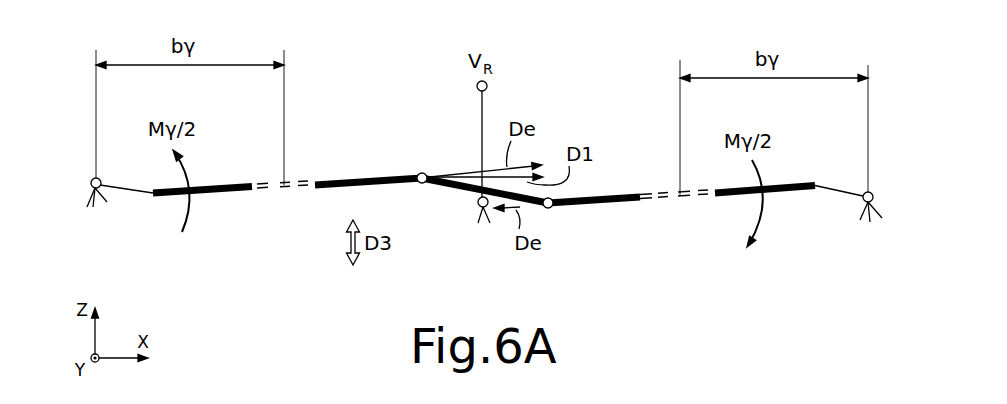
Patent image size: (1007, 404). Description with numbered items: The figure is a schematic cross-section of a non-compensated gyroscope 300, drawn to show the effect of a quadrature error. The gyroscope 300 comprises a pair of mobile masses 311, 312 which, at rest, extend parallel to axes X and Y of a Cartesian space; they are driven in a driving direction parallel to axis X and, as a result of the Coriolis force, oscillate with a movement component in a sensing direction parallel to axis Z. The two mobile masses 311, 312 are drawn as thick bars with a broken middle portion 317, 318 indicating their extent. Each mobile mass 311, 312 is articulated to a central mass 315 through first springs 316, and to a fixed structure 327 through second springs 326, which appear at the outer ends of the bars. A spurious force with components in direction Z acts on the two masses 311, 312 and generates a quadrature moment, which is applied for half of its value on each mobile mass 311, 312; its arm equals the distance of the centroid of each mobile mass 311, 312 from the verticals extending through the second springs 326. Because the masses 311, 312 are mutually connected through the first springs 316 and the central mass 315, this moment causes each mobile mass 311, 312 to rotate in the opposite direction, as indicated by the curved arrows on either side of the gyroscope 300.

The non-compensated gyroscope 300 is at (796, 39).
The mobile mass 311 is at (362, 177).
The mobile mass 312 is at (605, 195).
The central mass 315 is at (455, 188).
The first springs 316 is at (422, 172).
The left bar break section 317 is at (270, 195).
The right bar break section 318 is at (683, 200).
The second springs 326 is at (93, 179).
The fixed structure 327 is at (90, 200).